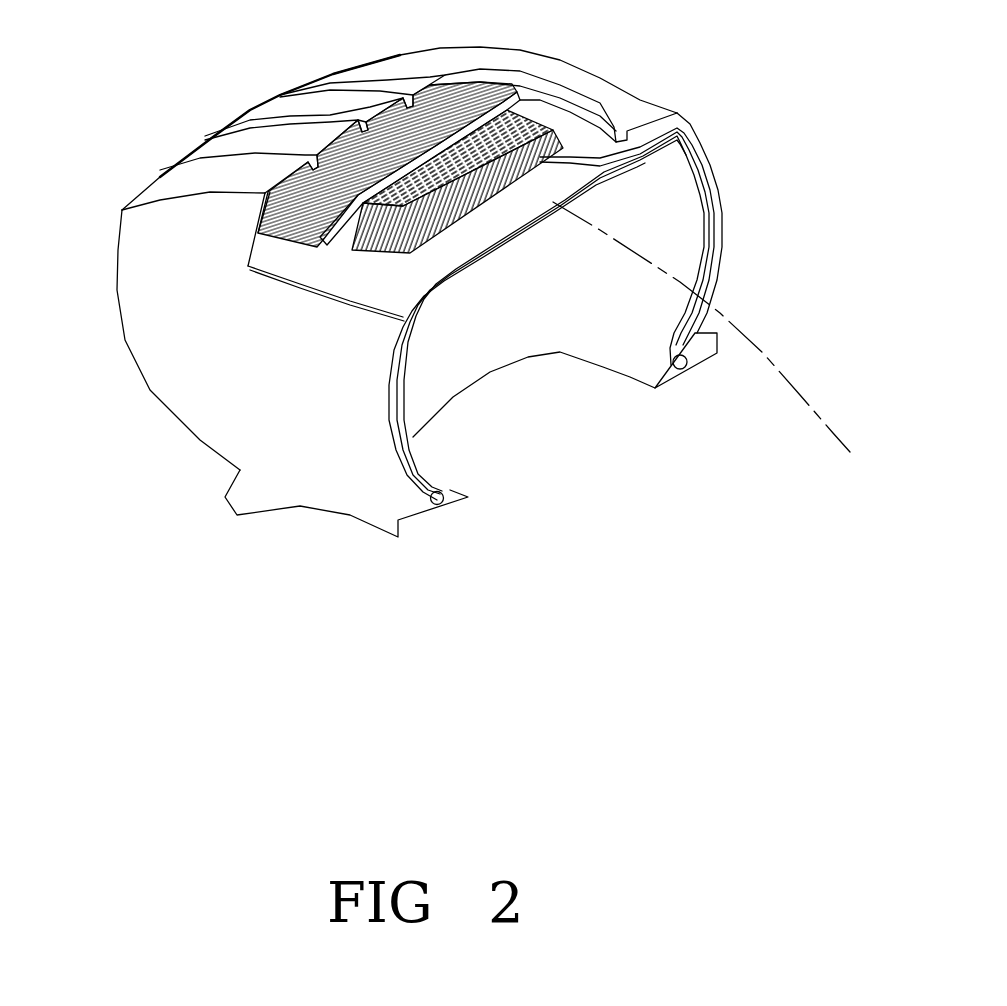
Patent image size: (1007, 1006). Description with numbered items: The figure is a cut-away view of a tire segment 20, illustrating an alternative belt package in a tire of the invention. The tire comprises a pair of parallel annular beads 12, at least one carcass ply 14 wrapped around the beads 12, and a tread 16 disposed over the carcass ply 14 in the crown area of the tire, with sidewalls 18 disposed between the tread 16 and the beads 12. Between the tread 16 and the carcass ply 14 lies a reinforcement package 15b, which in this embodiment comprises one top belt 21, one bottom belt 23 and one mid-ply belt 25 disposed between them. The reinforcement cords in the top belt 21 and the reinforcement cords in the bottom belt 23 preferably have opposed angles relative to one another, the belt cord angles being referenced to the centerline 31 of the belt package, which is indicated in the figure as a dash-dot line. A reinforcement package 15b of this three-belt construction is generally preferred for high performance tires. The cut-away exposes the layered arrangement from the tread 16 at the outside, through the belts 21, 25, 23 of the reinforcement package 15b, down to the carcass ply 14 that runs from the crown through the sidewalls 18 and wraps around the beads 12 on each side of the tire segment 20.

The annular beads 12 is at (680, 370).
The carcass ply 14 is at (703, 197).
The reinforcement package 15b is at (357, 263).
The tread 16 is at (225, 128).
The sidewalls 18 is at (160, 295).
The tire segment 20 is at (300, 558).
The top belt 21 is at (472, 100).
The bottom belt 23 is at (553, 137).
The mid-ply belt 25 is at (513, 127).
The centerline 31 is at (763, 355).